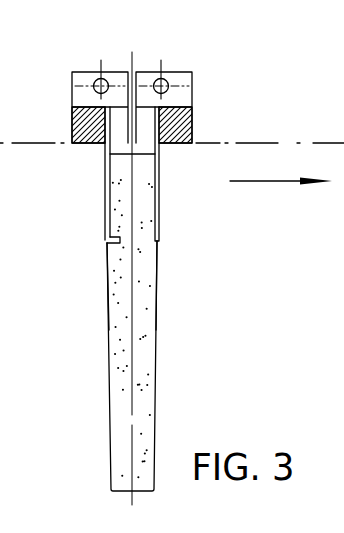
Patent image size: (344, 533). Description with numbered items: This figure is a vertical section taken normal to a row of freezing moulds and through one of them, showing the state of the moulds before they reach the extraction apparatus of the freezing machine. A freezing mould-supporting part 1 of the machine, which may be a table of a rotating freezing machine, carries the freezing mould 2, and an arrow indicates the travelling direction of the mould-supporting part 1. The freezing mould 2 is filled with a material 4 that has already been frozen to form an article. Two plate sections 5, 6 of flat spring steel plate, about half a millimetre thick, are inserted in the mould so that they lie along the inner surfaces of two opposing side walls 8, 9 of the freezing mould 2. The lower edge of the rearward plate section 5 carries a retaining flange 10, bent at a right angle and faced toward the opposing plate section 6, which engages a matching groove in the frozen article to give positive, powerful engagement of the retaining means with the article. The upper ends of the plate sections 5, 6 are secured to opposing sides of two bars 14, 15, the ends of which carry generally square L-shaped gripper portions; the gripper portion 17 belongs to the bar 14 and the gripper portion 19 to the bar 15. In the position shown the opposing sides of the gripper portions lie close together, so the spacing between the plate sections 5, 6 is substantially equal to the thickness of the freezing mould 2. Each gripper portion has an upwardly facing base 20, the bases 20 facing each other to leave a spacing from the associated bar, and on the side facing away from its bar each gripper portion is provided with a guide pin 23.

The freezing mould-supporting part 1 is at (279, 143).
The freezing mould 2 is at (131, 322).
The material 4 is at (122, 345).
The plate section 5 is at (105, 210).
The plate section 6 is at (158, 212).
The side wall of freezing mould 8 is at (108, 290).
The side wall of freezing mould 9 is at (157, 290).
The retaining flange 10 is at (115, 245).
The bar 14 is at (85, 135).
The bar 15 is at (192, 128).
The gripper portion 17 is at (72, 75).
The gripper portion 19 is at (192, 72).
The base 20 is at (80, 75).
The guide pin 23 is at (100, 78).